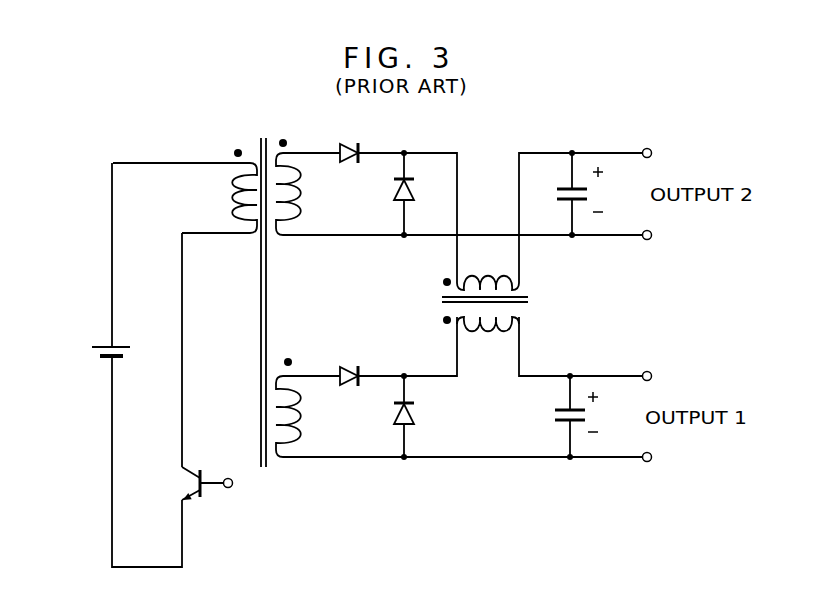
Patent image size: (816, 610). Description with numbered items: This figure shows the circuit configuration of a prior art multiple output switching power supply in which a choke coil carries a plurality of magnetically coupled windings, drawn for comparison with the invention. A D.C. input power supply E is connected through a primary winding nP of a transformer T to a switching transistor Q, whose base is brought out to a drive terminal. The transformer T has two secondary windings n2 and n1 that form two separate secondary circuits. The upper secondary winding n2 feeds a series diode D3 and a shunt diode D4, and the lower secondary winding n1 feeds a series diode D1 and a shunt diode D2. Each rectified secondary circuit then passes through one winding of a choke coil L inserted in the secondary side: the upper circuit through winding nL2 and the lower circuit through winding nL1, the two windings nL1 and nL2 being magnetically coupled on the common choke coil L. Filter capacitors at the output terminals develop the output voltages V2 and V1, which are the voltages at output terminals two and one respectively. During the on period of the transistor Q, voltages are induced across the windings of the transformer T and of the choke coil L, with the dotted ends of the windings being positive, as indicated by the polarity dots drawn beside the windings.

The transformer T is at (263, 137).
The primary winding nP is at (237, 207).
The secondary winding n2 is at (293, 200).
The secondary winding n1 is at (292, 417).
The diode D1 is at (342, 371).
The diode D2 is at (417, 412).
The diode D3 is at (347, 148).
The diode D4 is at (397, 193).
The choke coil L is at (440, 298).
The choke coil winding nL1 is at (519, 320).
The choke coil winding nL2 is at (519, 284).
The D.C. input power supply E is at (92, 352).
The transistor Q is at (182, 481).
The output voltage V1 is at (596, 414).
The output voltage V2 is at (597, 191).